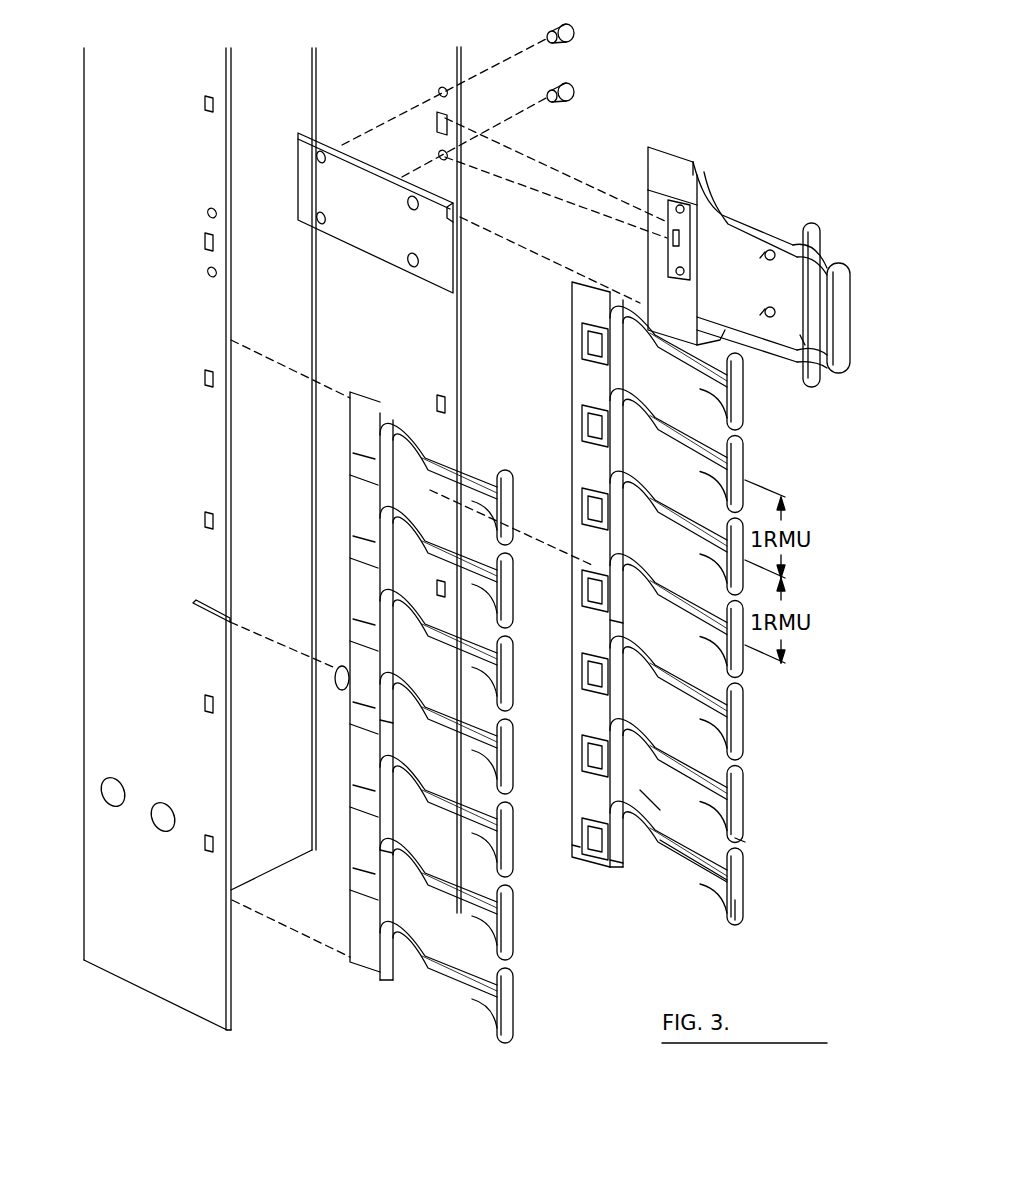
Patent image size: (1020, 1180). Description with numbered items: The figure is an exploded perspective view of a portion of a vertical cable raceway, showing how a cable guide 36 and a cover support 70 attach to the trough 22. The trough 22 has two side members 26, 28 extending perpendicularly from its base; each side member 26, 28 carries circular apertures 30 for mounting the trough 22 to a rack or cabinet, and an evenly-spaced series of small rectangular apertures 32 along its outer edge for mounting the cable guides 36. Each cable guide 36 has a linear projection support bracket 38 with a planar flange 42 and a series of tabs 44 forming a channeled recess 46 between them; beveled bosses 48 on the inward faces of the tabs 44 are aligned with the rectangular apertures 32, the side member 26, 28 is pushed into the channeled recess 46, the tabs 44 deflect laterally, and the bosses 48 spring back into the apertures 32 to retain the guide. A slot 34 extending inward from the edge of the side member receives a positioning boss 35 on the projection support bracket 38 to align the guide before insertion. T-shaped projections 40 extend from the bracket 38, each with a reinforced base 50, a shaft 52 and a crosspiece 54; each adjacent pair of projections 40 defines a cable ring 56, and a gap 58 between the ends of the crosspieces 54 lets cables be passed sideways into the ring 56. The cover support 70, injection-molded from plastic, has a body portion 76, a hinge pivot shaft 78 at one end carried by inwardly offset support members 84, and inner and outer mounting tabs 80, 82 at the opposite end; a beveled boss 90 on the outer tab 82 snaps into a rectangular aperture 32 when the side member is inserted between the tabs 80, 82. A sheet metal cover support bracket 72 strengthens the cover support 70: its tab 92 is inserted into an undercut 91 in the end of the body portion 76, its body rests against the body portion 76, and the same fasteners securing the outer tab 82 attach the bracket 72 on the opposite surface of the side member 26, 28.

The trough 22 is at (170, 76).
The side member 26 is at (218, 150).
The side member 28 is at (340, 66).
The circular apertures 30 is at (118, 806).
The rectangular apertures 32 is at (205, 385).
The slot 34 is at (212, 614).
The positioning boss 35 is at (336, 672).
The cable guide 36 is at (592, 365).
The projection support bracket 38 is at (612, 635).
The T-shaped projections 40 is at (740, 812).
The planar flange 42 is at (345, 418).
The tabs 44 is at (355, 530).
The channeled recess 46 is at (366, 855).
The bosses 48 is at (590, 840).
The reinforced base 50 is at (640, 880).
The shaft 52 is at (700, 872).
The crosspiece 54 is at (735, 912).
The cable ring 56 is at (660, 810).
The gap 58 is at (745, 842).
The cover support 70 is at (743, 262).
The cover support bracket 72 is at (382, 218).
The body portion 76 is at (742, 215).
The hinge pivot shaft 78 is at (838, 268).
The inner mounting tabs 80 is at (656, 168).
The outer mounting tab 82 is at (672, 282).
The support members 84 is at (790, 278).
The boss 90 is at (670, 240).
The undercut 91 is at (800, 335).
The tab 92 is at (462, 255).